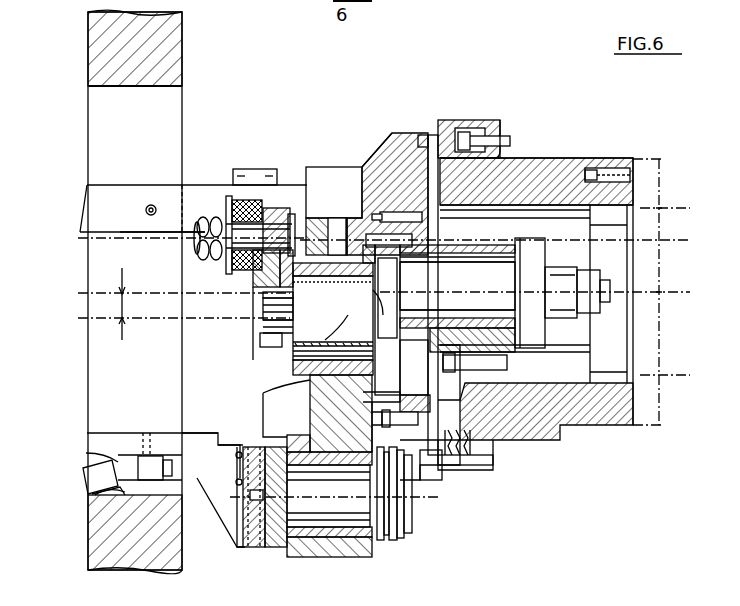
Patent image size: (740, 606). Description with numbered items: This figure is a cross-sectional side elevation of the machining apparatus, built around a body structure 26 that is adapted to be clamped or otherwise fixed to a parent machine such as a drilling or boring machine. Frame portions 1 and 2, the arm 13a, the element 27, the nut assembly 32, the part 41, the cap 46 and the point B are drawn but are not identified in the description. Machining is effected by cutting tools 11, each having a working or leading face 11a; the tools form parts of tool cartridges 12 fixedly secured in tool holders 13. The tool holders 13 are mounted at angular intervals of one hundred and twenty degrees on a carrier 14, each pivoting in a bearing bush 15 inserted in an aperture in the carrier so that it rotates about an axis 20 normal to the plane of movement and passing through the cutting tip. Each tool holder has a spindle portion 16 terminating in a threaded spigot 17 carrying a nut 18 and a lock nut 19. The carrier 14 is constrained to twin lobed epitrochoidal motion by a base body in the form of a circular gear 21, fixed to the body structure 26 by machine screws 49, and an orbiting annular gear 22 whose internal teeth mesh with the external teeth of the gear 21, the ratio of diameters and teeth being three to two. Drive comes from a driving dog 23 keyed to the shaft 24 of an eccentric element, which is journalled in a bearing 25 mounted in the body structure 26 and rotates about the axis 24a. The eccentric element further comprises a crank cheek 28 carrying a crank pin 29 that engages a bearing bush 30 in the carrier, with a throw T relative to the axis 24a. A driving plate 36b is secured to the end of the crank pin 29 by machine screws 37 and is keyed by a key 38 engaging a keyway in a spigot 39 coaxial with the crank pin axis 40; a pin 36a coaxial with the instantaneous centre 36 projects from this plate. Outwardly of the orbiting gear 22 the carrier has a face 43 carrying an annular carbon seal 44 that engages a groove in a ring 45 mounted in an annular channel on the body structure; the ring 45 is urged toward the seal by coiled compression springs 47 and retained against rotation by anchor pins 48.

The machine frame 1 is at (130, 89).
The frame wall 2 is at (180, 60).
The cutting tool 11 is at (96, 476).
The working or leading face 11a is at (90, 497).
The tool cartridge 12 is at (120, 462).
The tool holder 13 is at (150, 196).
The plate arm 13a is at (276, 157).
The carrier 14 is at (312, 400).
The bearing bush 15 is at (328, 537).
The spindle portion 16 is at (335, 496).
The threaded spigot 17 is at (410, 502).
The nut 18 is at (394, 538).
The lock nut 19 is at (400, 530).
The axis 20 is at (220, 480).
The circular gear 21 is at (398, 328).
The annular gear 22 is at (388, 160).
The driving dog 23 is at (532, 250).
The shaft 24 is at (535, 317).
The axis of rotation 24a is at (702, 265).
The bearing 25 is at (457, 286).
The body structure 26 is at (537, 158).
The screw 27 is at (606, 168).
The crank cheek 28 is at (352, 190).
The crank pin 29 is at (333, 319).
The bearing bush 30 is at (312, 385).
The nut assembly 32 is at (240, 205).
The instantaneous centre 36 is at (164, 235).
The pin 36a is at (282, 212).
The driving plate 36b is at (262, 280).
The machine screws 37 is at (272, 352).
The key 38 is at (268, 297).
The spigot 39 is at (270, 330).
The axis 40 is at (178, 320).
The conical housing 41 is at (378, 185).
The face 43 is at (426, 480).
The annular seal 44 is at (430, 135).
The ring 45 is at (431, 150).
The cap 46 is at (470, 125).
The coiled compression springs 47 is at (473, 456).
The anchor pins 48 is at (484, 150).
The machine screws 49 is at (500, 426).
The point B is at (354, 315).